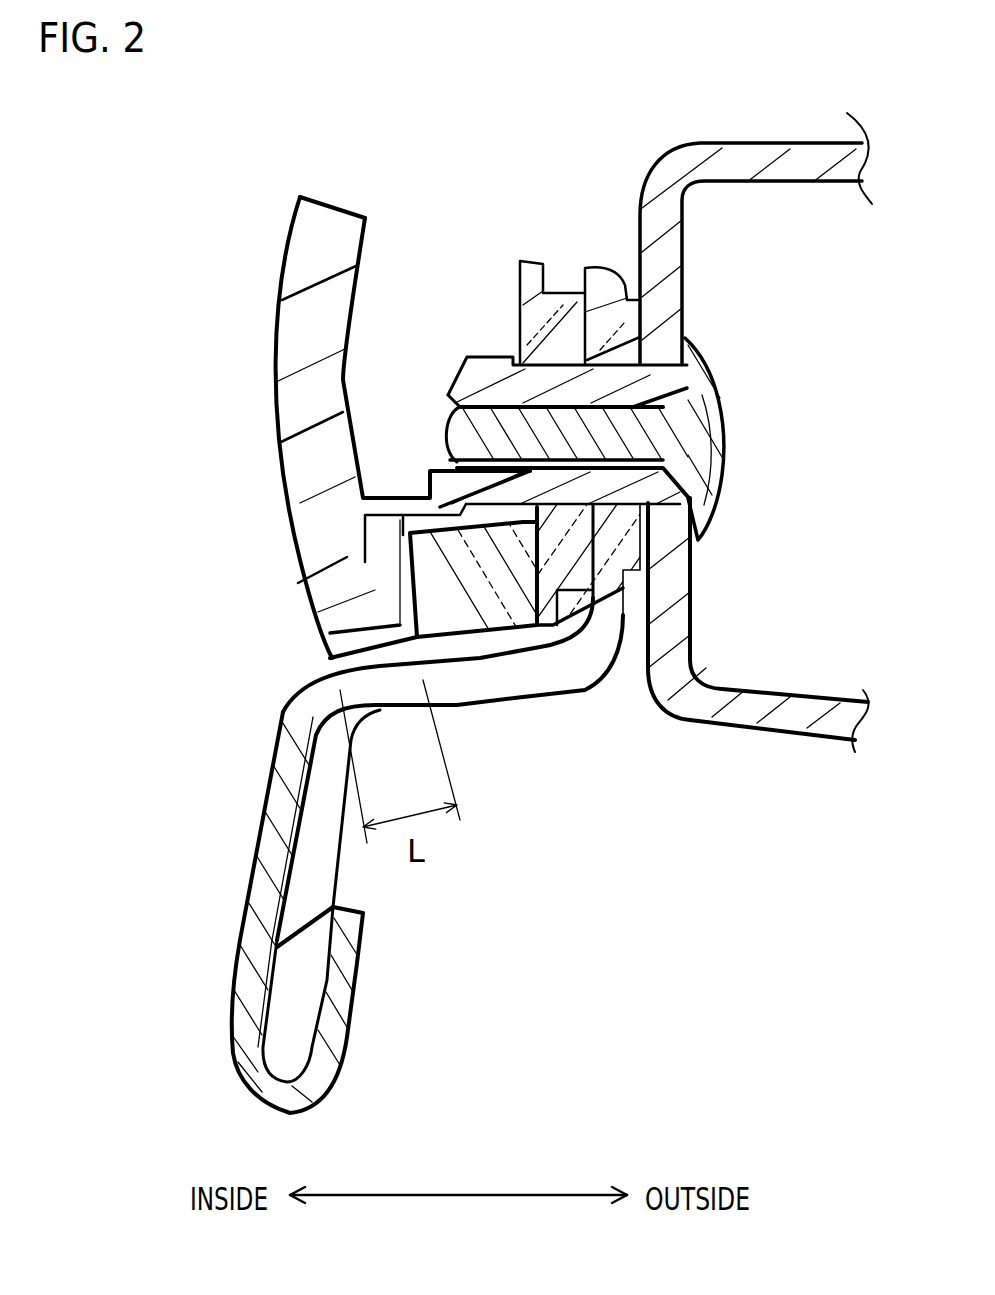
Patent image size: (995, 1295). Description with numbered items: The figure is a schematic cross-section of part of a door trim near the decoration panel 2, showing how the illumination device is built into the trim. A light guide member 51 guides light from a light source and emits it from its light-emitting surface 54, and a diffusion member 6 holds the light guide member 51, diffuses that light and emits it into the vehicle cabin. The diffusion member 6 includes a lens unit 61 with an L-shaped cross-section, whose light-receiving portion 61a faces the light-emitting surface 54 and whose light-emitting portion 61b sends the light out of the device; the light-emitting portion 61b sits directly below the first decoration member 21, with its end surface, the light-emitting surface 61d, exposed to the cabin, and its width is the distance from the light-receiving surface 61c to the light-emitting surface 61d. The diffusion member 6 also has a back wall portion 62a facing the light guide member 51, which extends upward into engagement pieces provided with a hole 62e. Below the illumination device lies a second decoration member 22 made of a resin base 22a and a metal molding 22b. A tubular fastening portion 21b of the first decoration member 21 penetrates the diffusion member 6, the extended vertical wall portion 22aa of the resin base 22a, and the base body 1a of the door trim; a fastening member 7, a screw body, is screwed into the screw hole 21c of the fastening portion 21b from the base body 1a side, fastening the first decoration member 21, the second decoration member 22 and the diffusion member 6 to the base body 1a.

The base body 1a is at (660, 272).
The decoration panel 2 is at (257, 281).
The first decoration member 21 is at (313, 313).
The fastening portion 21b is at (650, 497).
The screw hole 21c is at (520, 450).
The second decoration member 22 is at (95, 895).
The resin base 22a is at (310, 860).
The metal molding 22b is at (272, 938).
The extended vertical wall portion 22aa is at (628, 314).
The light guide member 51 is at (535, 640).
The light-emitting surface 54 is at (347, 555).
The diffusion member 6 is at (550, 612).
The lens unit 61 is at (120, 580).
The light-receiving portion 61a is at (330, 587).
The light-emitting portion 61b is at (330, 642).
The light-receiving surface 61c is at (352, 742).
The light-emitting surface 61d is at (330, 653).
The back wall portion 62a is at (610, 616).
The hole 62e is at (567, 403).
The fastening member 7 is at (712, 400).